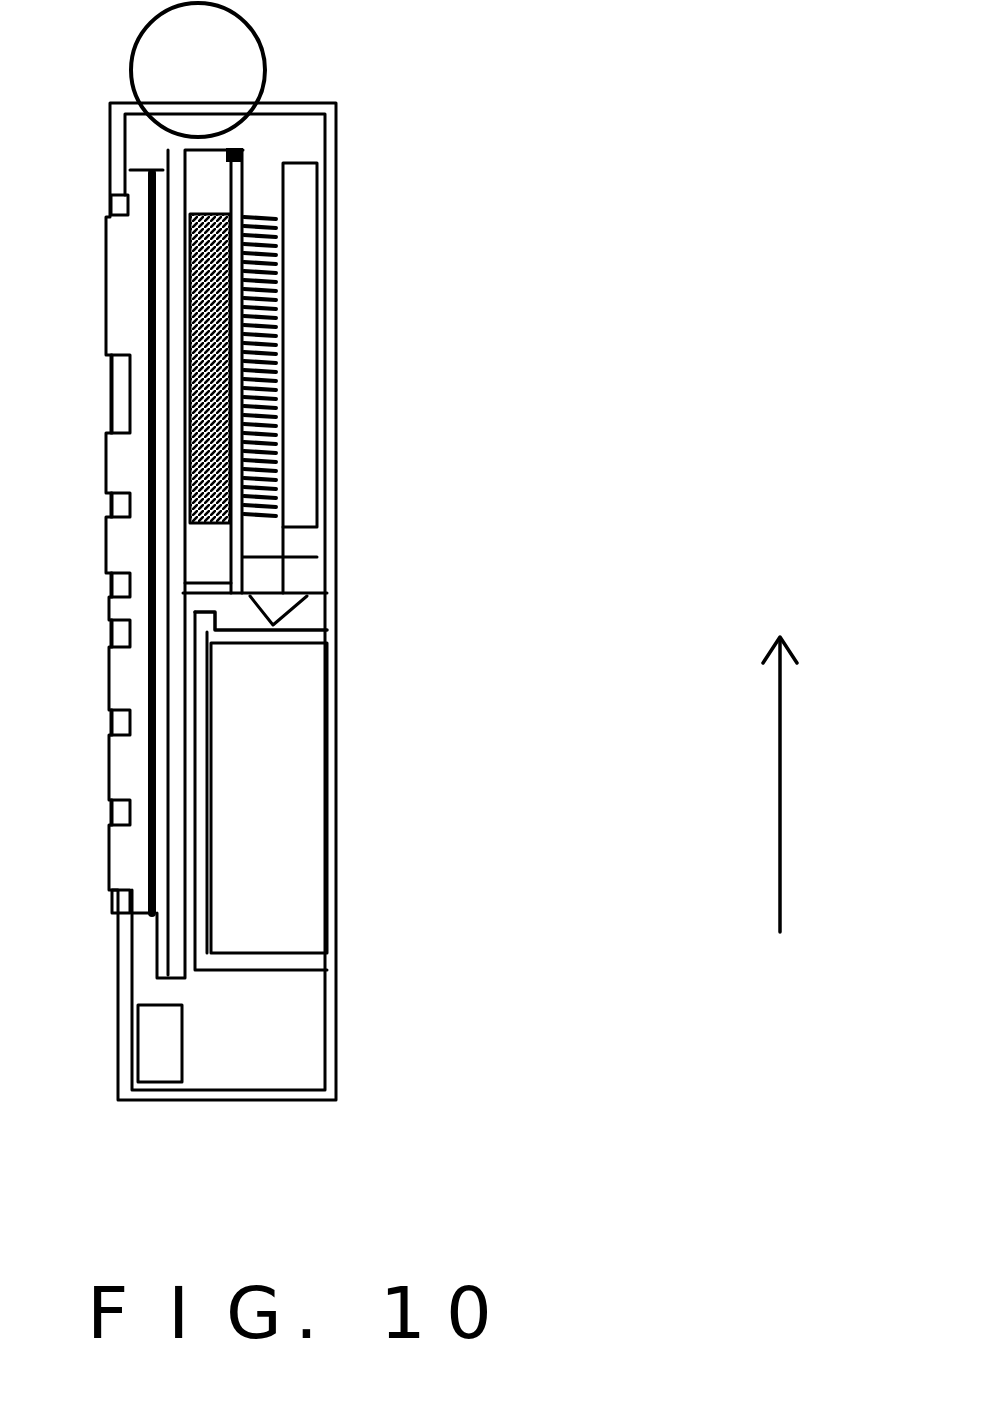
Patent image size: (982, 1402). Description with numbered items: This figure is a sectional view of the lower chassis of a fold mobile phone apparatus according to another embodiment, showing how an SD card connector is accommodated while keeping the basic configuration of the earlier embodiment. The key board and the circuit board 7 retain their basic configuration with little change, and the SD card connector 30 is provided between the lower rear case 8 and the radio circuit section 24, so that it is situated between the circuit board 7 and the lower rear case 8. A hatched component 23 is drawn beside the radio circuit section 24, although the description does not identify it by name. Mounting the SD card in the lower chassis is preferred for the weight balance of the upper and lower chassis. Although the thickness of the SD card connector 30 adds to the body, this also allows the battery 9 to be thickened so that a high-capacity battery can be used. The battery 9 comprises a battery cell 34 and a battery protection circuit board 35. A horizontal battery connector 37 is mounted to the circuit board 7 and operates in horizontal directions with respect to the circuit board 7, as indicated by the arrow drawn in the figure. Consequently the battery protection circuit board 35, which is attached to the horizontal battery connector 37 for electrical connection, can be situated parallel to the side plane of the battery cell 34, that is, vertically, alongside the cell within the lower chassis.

The circuit board 7 is at (334, 296).
The lower rear case 8 is at (345, 551).
The SD card connector 30 is at (420, 378).
The radio circuit section 24 is at (378, 366).
The weight member 23 is at (343, 379).
The horizontal battery connector 37 is at (356, 591).
The battery protection circuit board 35 is at (352, 652).
The battery cell 34 is at (347, 792).
The battery 9 is at (547, 635).